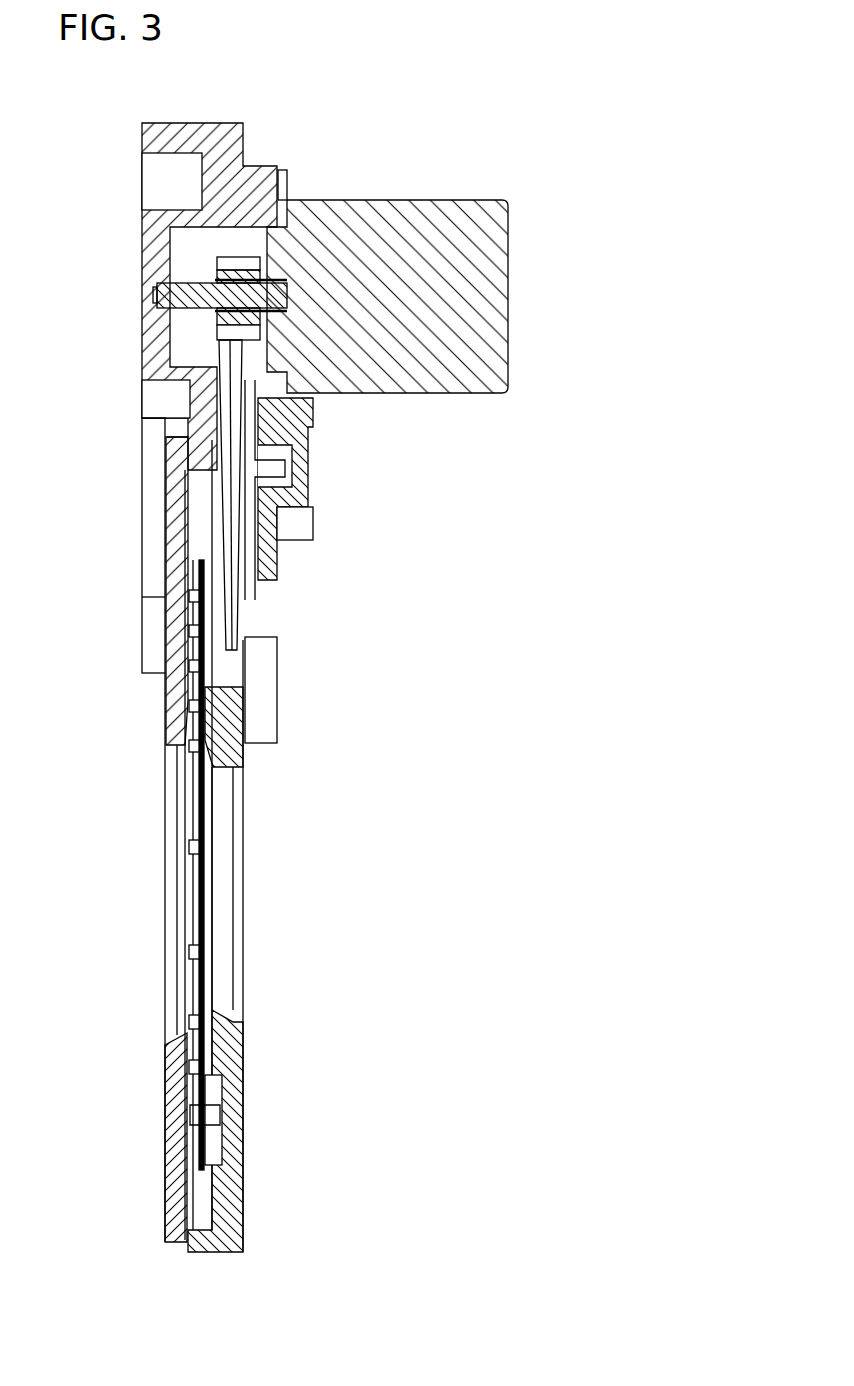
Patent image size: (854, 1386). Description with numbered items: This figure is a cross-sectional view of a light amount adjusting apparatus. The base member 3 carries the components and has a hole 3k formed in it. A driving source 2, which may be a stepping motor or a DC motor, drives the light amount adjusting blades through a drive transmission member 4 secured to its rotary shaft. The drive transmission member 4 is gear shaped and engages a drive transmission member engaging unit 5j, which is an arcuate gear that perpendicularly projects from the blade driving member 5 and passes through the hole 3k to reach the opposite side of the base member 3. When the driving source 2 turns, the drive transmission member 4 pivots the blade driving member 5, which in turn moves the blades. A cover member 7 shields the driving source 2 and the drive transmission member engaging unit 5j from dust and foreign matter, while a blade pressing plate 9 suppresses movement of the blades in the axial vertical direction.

The driving source 2 is at (398, 206).
The base member 3 is at (218, 1053).
The hole 3k is at (188, 582).
The drive transmission member 4 is at (215, 280).
The blade driving member 5 is at (210, 650).
The drive transmission member engaging unit 5j is at (240, 548).
The cover member 7 is at (305, 493).
The blade pressing plate 9 is at (165, 1100).